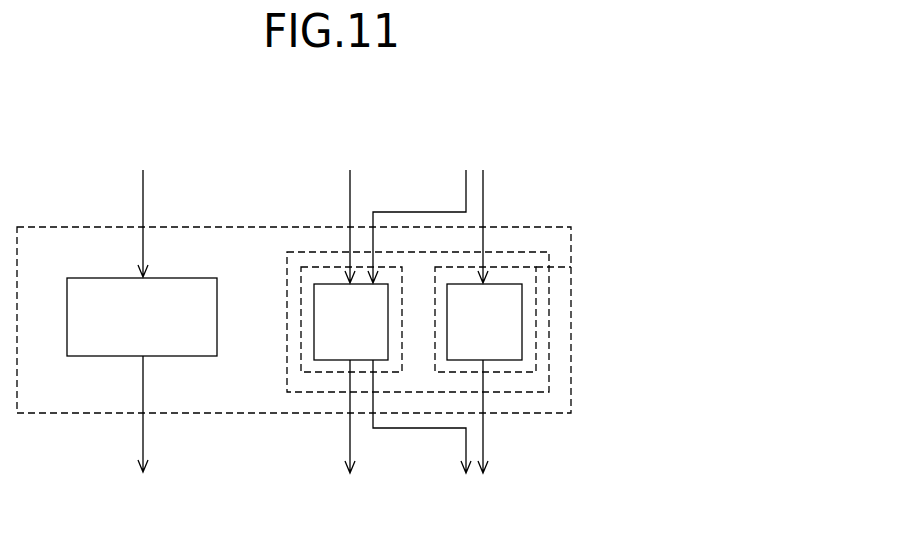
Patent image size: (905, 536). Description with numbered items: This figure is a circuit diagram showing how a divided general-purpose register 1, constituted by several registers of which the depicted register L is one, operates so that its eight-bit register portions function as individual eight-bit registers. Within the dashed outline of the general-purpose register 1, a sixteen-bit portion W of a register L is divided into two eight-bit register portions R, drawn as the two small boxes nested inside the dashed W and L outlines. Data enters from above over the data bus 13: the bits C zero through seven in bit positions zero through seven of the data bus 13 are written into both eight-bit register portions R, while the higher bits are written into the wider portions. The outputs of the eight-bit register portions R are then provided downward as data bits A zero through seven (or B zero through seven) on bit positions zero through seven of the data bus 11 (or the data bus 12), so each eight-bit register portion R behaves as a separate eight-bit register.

The general-purpose register 1 is at (571, 227).
The 8-bit register portion R is at (571, 267).
The 16-bit portion W is at (549, 325).
The register L is at (571, 398).
The data bus 13 is at (406, 210).
The data bus 11 is at (406, 443).
The data bus 12 is at (406, 443).